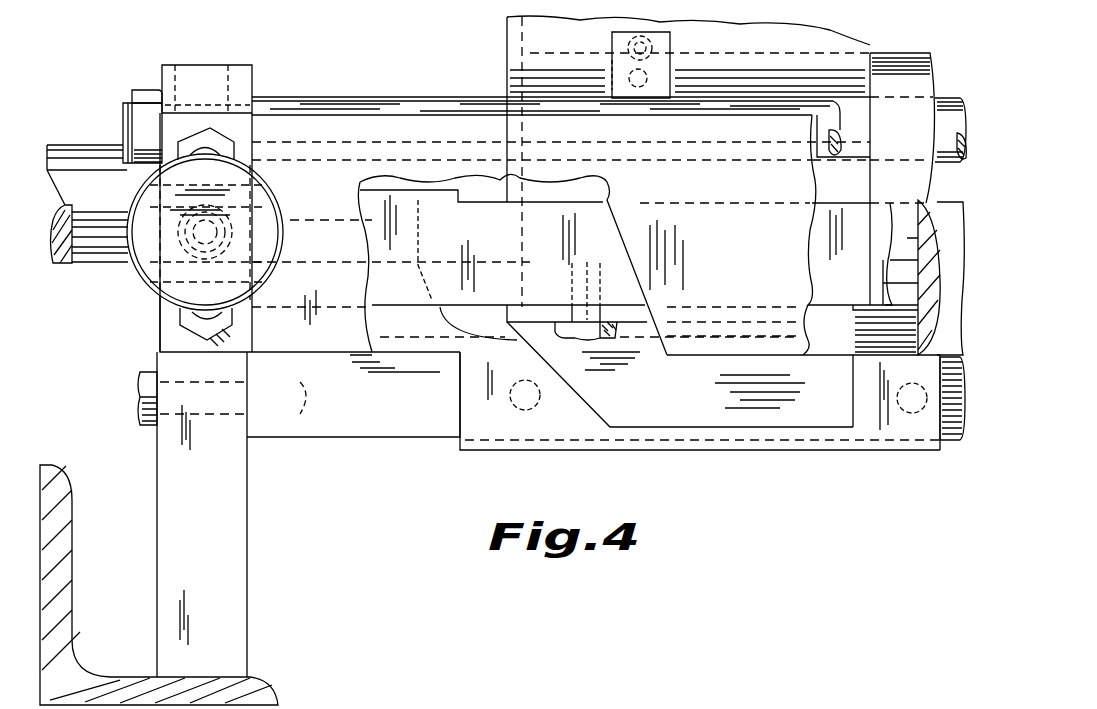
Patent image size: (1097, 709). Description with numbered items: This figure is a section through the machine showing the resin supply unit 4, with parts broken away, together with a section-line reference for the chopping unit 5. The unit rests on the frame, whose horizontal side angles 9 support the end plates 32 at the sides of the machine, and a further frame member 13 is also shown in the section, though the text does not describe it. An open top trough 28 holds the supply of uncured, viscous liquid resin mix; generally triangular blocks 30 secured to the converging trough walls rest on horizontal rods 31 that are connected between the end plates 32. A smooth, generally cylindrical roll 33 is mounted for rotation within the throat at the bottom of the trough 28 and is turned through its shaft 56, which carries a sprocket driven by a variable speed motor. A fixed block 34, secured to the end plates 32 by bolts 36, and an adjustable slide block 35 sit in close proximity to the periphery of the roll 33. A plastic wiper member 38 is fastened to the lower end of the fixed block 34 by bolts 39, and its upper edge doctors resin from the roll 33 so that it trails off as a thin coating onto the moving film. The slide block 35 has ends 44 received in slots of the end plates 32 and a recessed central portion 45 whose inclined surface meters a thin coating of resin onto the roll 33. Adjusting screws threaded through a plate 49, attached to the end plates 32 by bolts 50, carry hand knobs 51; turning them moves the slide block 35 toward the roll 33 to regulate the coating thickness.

The resin supply unit 4 is at (400, 80).
The chopping unit 5 is at (742, 3).
The side angles 9 is at (258, 692).
The slide body 13 is at (262, 190).
The trough 28 is at (868, 48).
The triangular blocks 30 is at (672, 62).
The horizontal rods 31 is at (824, 140).
The end plates 32 is at (225, 66).
The roll 33 is at (918, 55).
The fixed block 34 is at (960, 190).
The slide block 35 is at (415, 299).
The bolts 36 is at (140, 378).
The wiper member 38 is at (880, 448).
The bolts 39 is at (520, 402).
The ends of slide block 44 is at (140, 198).
The recessed central portion 45 is at (585, 203).
The plate 49 is at (170, 332).
The bolts 50 is at (200, 136).
The hand knob 51 is at (150, 270).
The shaft 56 is at (98, 125).